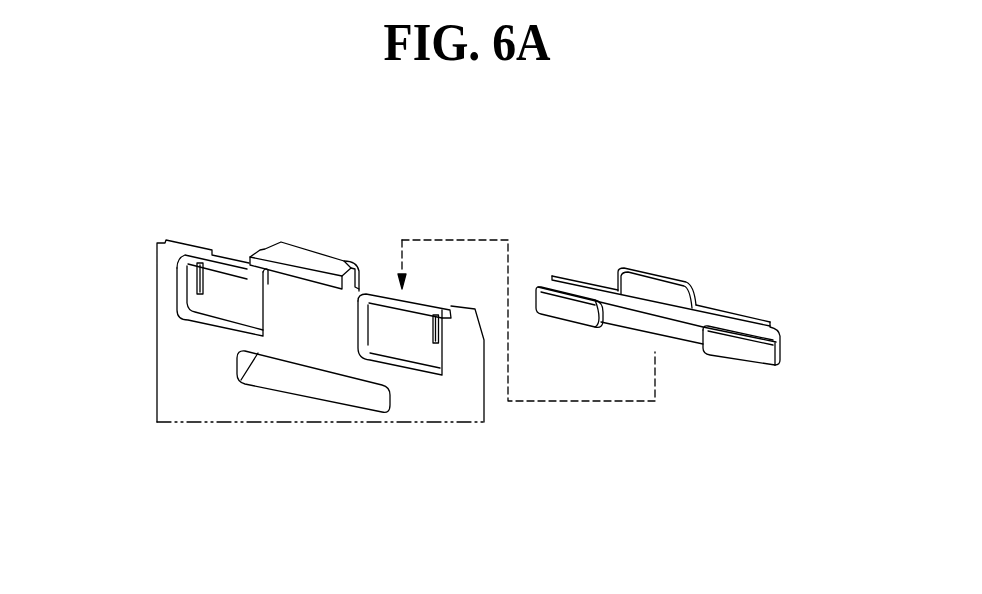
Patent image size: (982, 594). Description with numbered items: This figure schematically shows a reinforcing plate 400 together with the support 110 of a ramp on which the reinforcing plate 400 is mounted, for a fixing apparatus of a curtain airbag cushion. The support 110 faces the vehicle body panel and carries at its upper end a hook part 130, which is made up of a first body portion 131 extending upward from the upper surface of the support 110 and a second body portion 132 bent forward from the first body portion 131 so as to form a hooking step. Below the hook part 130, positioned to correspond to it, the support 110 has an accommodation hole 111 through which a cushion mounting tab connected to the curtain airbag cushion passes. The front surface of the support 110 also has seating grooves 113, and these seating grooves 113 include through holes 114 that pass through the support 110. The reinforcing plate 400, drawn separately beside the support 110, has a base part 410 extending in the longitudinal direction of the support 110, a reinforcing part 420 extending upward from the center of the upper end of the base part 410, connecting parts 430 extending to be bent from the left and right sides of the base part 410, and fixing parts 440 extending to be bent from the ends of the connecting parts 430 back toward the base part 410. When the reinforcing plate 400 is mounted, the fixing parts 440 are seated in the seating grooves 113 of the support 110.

The support 110 is at (188, 403).
The accommodation hole 111 is at (318, 386).
The seating grooves 113 is at (201, 306).
The through holes 114 is at (197, 272).
The hook part 130 is at (388, 193).
The first body portion 131 is at (358, 287).
The second body portion 132 is at (297, 260).
The reinforcing plate 400 is at (573, 260).
The base part 410 is at (681, 338).
The reinforcing part 420 is at (655, 292).
The connecting parts 430 is at (774, 354).
The fixing parts 440 is at (750, 352).